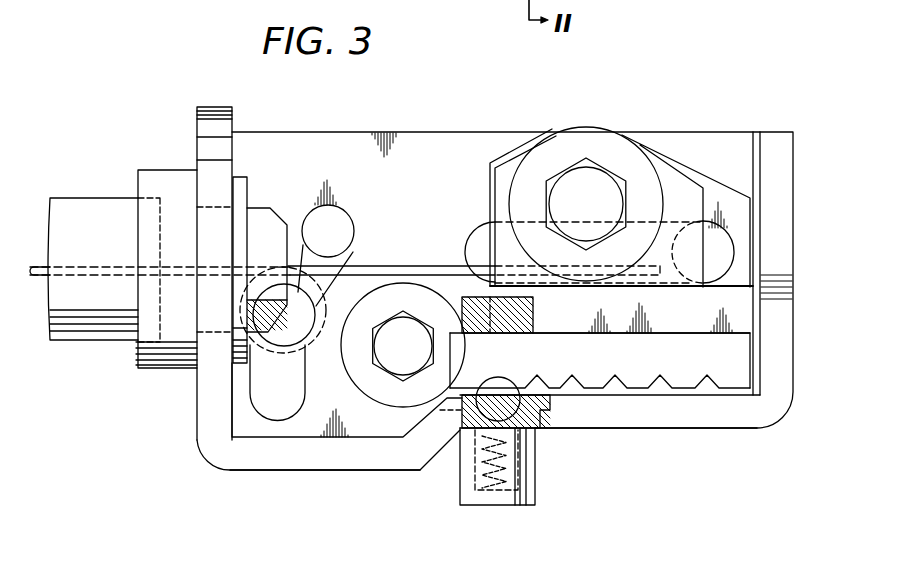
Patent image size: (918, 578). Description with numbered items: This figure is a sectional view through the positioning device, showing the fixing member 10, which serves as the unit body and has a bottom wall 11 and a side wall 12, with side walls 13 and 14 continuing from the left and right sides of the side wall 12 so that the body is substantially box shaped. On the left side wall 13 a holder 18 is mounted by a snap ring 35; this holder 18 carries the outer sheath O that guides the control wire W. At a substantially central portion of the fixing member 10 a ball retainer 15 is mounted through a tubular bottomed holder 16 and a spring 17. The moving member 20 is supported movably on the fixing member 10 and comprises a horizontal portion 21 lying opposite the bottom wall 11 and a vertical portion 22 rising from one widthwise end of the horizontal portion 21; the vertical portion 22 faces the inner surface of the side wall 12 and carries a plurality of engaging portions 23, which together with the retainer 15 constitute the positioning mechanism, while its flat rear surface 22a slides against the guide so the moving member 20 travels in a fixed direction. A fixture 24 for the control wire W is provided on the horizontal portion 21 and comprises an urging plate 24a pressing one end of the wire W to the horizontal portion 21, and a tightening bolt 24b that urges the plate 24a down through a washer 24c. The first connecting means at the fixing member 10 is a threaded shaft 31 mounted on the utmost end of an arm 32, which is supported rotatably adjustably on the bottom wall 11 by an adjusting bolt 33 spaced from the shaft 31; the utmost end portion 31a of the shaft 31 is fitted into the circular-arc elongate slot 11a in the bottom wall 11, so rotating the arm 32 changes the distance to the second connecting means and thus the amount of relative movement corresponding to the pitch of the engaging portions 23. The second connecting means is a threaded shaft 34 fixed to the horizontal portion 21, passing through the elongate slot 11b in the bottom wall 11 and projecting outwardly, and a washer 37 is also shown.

The fixing member 10 is at (382, 470).
The bottom wall 11 is at (458, 133).
The elongate slot 11a is at (283, 422).
The elongate slot 11b is at (472, 240).
The side wall 12 is at (337, 470).
The side wall 13 is at (197, 407).
The side wall 14 is at (792, 217).
The ball retainer 15 is at (508, 417).
The holder 16 is at (478, 505).
The spring 17 is at (498, 488).
The holder 18 is at (158, 170).
The moving member 20 is at (698, 140).
The horizontal portion 21 is at (740, 140).
The vertical portion 22 is at (747, 360).
The rear surface 22a is at (727, 328).
The engaging portions 23 is at (697, 385).
The fixture 24 is at (620, 160).
The urging plate 24a is at (658, 140).
The tightening bolt 24b is at (660, 66).
The washer 24c is at (568, 134).
The threaded shaft 31 is at (300, 245).
The utmost end portion 31a is at (305, 309).
The arm 32 is at (278, 363).
The adjusting bolt 33 is at (412, 368).
The threaded shaft 34 is at (730, 252).
The snap ring 35 is at (232, 392).
The washer 37 is at (393, 287).
The control wire W is at (45, 282).
The outer sheath O is at (95, 332).